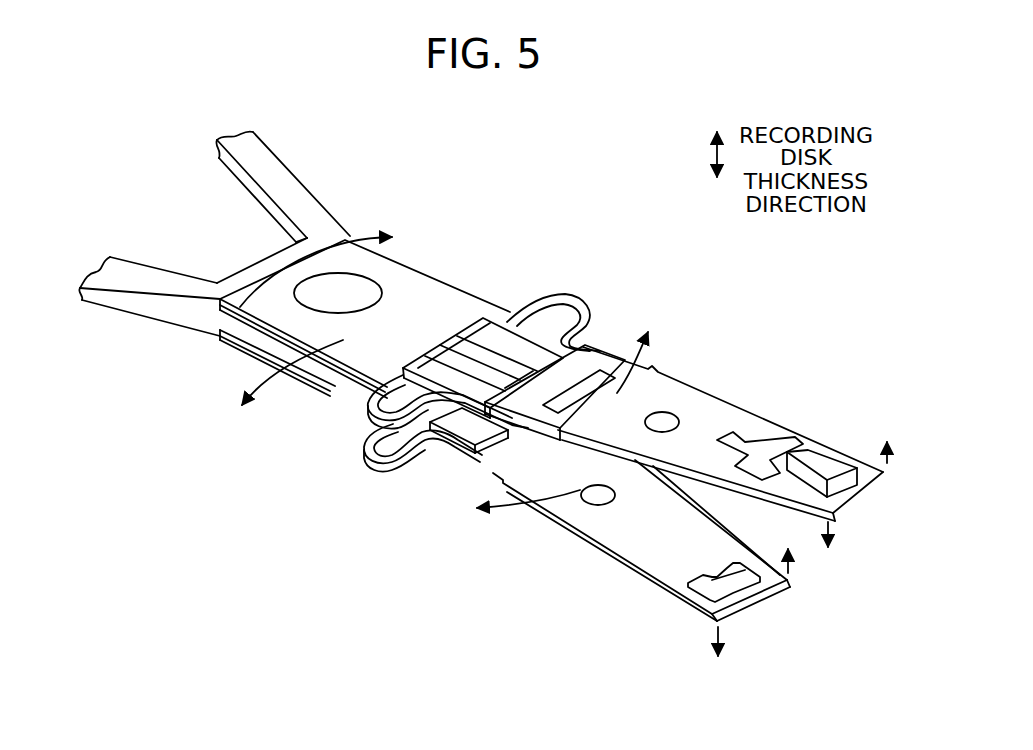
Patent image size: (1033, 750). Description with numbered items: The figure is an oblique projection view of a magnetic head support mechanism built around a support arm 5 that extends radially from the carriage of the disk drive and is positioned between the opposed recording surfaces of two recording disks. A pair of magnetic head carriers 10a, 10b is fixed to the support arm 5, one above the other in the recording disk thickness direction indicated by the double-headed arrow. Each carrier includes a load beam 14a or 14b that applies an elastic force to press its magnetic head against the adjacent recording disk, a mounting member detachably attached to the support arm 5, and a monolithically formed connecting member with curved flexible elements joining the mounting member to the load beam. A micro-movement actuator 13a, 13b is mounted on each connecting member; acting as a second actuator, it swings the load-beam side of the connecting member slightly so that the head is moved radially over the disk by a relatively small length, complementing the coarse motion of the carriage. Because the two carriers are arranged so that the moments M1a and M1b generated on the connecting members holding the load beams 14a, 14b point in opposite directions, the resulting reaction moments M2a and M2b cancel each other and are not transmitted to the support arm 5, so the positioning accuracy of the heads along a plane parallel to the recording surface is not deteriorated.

The support arm 5 is at (300, 197).
The magnetic head carrier 10a is at (597, 297).
The magnetic head carrier 10b is at (327, 463).
The micro-movement actuator 13a is at (510, 347).
The micro-movement actuator 13b is at (467, 427).
The load beam 14a is at (730, 417).
The load beam 14b is at (607, 530).
The moment M1a is at (653, 347).
The moment M1b is at (515, 517).
The reaction moment M2a is at (344, 259).
The reaction moment M2b is at (280, 391).